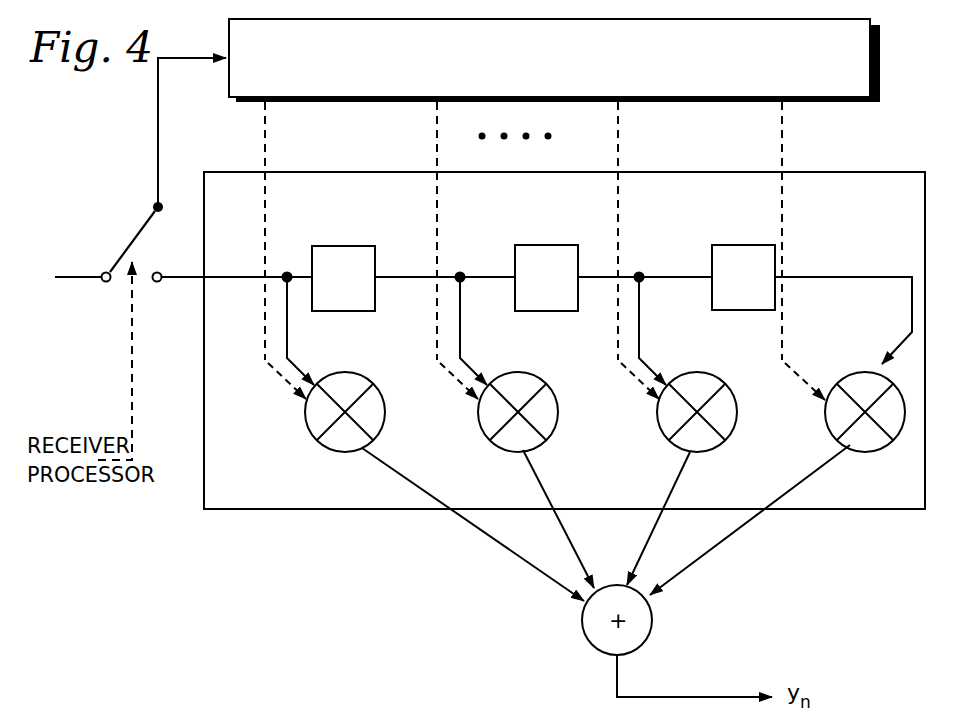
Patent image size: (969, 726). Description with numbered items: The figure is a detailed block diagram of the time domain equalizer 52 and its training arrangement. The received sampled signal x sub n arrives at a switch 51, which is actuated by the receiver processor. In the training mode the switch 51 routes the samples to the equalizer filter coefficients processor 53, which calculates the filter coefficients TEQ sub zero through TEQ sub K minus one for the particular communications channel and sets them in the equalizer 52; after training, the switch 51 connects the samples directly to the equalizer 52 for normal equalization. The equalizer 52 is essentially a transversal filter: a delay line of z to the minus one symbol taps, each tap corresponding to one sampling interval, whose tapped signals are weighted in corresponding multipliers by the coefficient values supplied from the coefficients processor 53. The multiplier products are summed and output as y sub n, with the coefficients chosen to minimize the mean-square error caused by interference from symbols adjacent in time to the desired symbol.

The switch 51 is at (122, 236).
The time domain equalizer 52 is at (846, 172).
The equalizer filter coefficients processor 53 is at (880, 51).